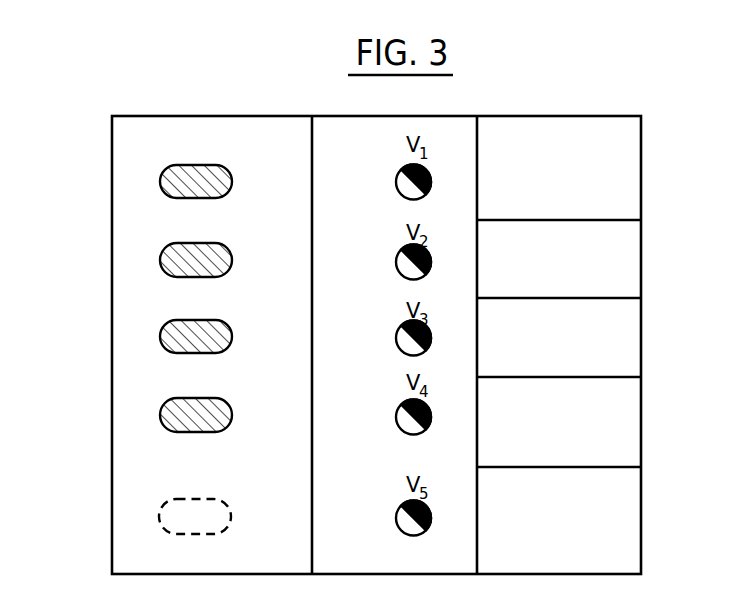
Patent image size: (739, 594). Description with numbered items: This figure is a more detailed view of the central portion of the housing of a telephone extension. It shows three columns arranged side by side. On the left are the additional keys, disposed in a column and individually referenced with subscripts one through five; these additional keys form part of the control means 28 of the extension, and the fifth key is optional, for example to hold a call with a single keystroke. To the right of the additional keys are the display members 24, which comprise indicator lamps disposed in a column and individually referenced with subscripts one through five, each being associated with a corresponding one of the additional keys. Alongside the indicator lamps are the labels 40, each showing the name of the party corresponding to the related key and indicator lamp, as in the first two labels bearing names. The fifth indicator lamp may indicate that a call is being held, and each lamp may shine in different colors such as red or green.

The display members 24 is at (470, 116).
The control means 28 is at (115, 199).
The labels 40 is at (556, 116).